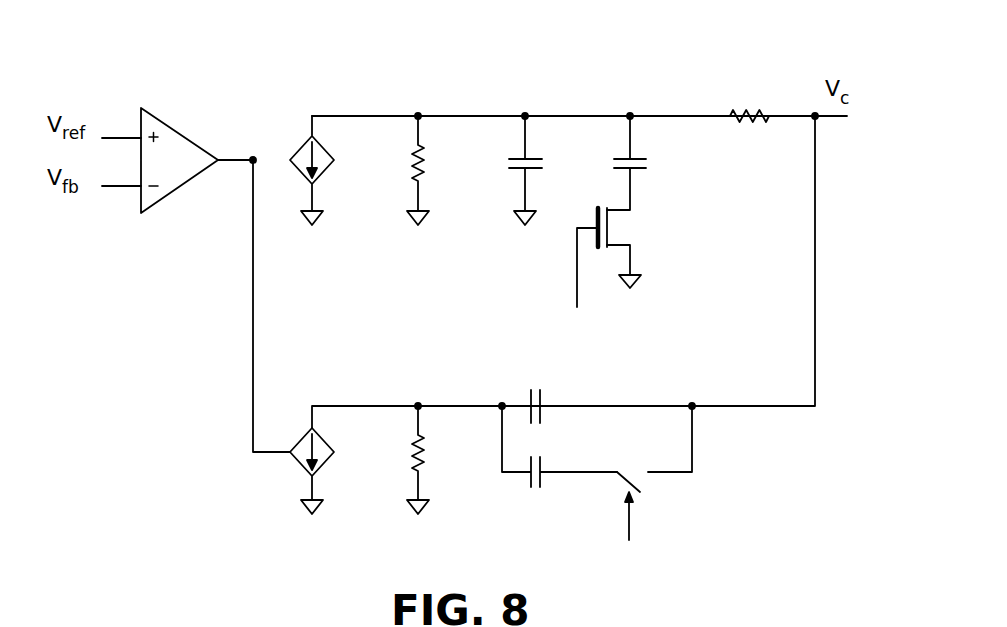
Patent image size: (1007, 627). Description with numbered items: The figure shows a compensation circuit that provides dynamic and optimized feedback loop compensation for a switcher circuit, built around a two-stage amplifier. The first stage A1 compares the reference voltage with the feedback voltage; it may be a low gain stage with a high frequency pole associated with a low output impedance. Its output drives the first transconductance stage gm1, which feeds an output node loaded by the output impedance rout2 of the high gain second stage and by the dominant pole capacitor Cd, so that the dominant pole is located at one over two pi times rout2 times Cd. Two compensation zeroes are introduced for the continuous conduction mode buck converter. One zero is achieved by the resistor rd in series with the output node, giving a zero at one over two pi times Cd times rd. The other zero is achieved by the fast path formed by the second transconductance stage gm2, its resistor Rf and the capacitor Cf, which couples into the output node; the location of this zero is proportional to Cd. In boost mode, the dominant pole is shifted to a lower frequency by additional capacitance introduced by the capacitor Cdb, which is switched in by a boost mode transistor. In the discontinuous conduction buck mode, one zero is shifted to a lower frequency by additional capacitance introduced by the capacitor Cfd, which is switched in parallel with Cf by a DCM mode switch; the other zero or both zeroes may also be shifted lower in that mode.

The first stage amplifier A1 is at (177, 160).
The first transconductance stage gm1 is at (336, 170).
The output impedance of the second stage rout2 is at (443, 170).
The dominant pole capacitor Cd is at (537, 170).
The boost mode capacitor Cdb is at (645, 163).
The zero resistor rd is at (749, 93).
The second transconductance stage gm2 is at (336, 468).
The feedback resistor Rf is at (432, 460).
The fast path capacitor Cf is at (597, 387).
The DCM mode capacitor Cfd is at (559, 466).